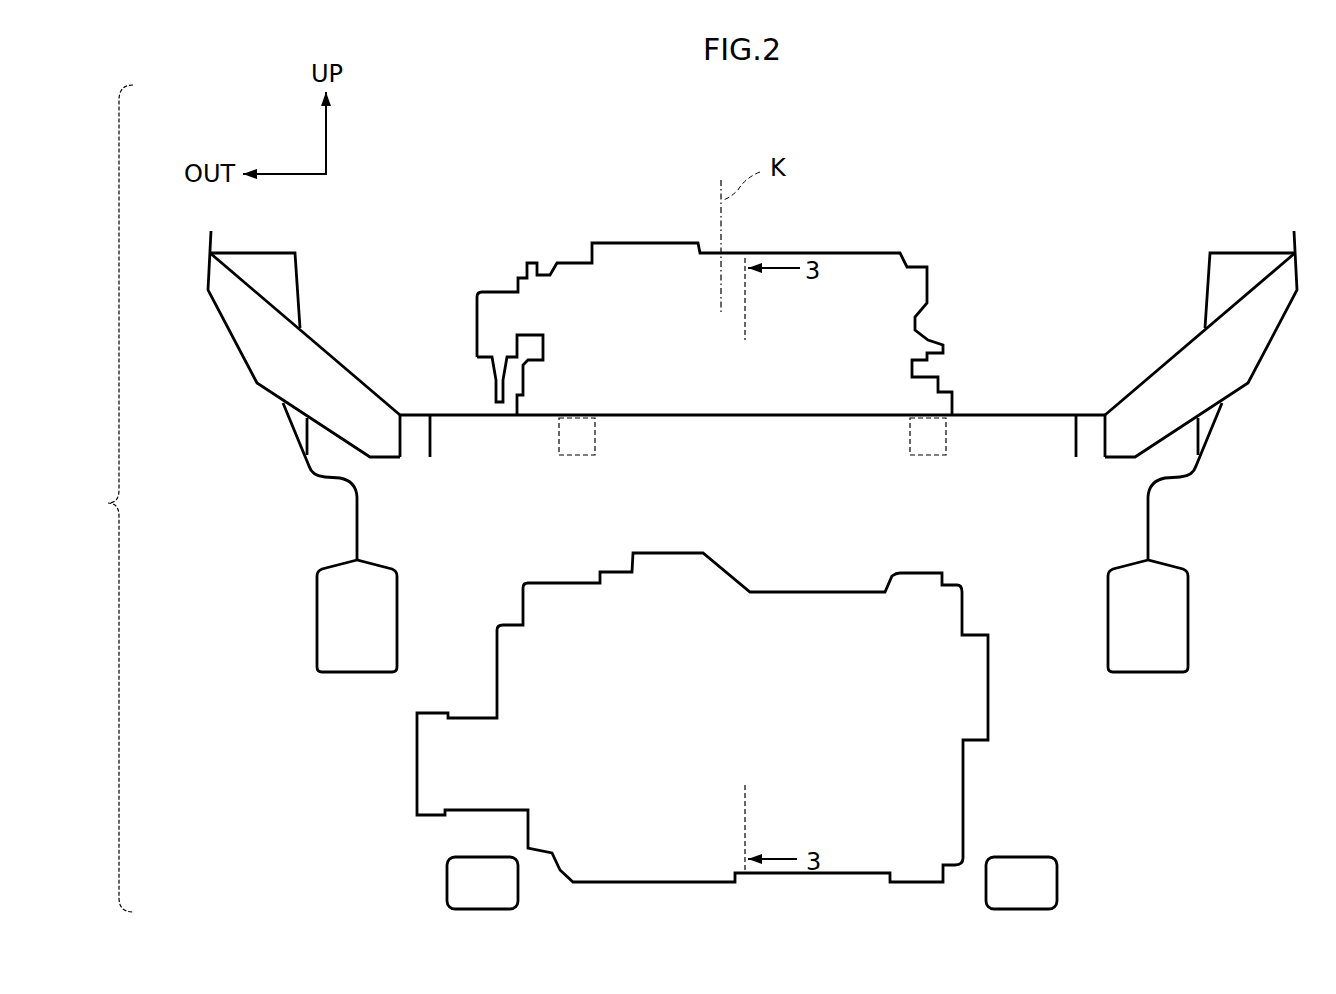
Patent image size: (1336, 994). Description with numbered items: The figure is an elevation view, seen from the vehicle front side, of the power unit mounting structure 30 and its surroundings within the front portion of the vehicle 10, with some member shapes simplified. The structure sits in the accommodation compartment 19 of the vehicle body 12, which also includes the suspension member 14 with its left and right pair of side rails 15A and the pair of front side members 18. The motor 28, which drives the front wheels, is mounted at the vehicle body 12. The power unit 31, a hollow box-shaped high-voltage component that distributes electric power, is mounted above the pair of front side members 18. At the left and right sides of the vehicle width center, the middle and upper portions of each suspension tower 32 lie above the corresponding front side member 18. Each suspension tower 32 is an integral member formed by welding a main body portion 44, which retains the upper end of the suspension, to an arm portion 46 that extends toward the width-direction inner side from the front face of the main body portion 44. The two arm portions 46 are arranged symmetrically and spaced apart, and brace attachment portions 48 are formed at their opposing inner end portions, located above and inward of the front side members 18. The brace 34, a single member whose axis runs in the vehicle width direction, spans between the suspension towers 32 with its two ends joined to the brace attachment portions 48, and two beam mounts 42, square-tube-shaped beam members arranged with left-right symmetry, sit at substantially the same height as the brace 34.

The vehicle 10 is at (1187, 147).
The vehicle body 12 is at (1180, 562).
The suspension member 14 is at (1051, 852).
The side rails 15A is at (447, 883).
The front side members 18 is at (313, 620).
The accommodation compartment 19 is at (995, 547).
The motor 28 is at (990, 700).
The power unit mounting structure 30 is at (1043, 217).
The power unit 31 is at (880, 250).
The suspension towers 32 is at (342, 320).
The brace 34 is at (998, 412).
The beam mounts 42 is at (598, 440).
The main body portion 44 is at (299, 283).
The arm portion 46 is at (350, 368).
The brace attachment portions 48 is at (418, 462).